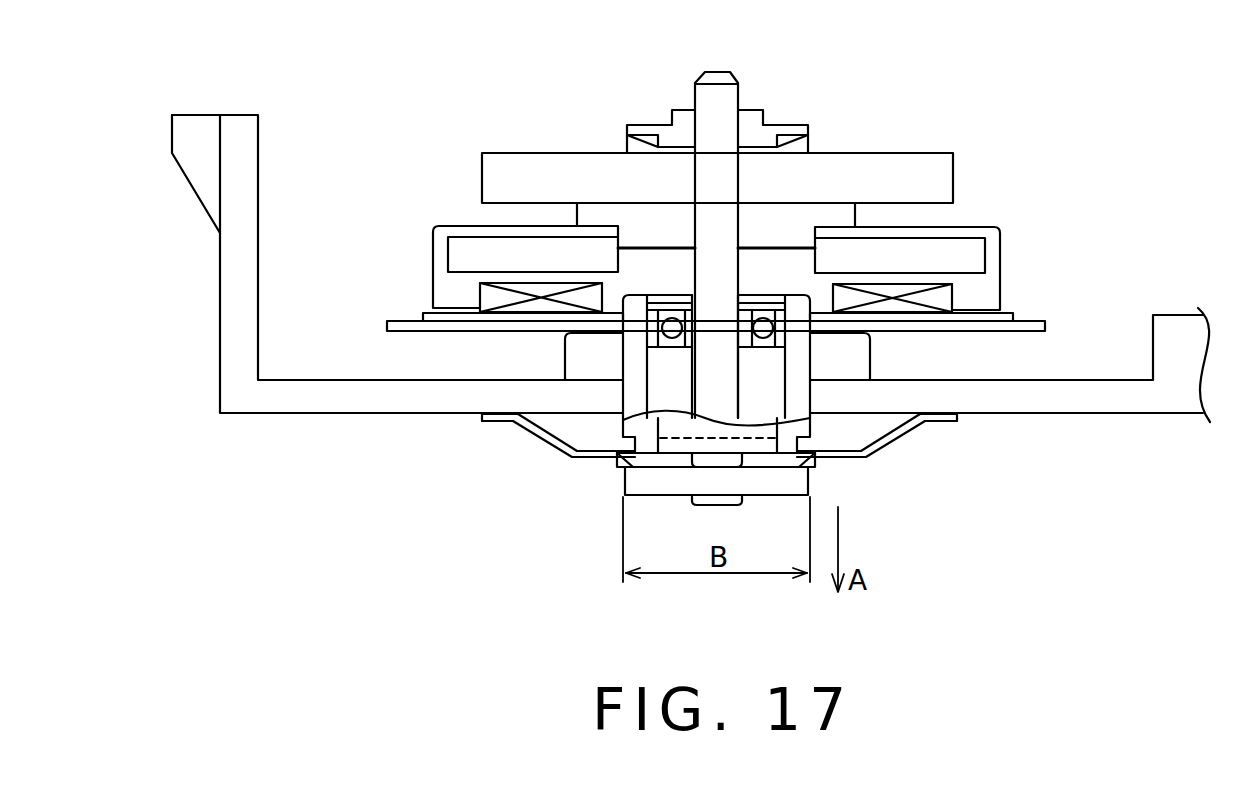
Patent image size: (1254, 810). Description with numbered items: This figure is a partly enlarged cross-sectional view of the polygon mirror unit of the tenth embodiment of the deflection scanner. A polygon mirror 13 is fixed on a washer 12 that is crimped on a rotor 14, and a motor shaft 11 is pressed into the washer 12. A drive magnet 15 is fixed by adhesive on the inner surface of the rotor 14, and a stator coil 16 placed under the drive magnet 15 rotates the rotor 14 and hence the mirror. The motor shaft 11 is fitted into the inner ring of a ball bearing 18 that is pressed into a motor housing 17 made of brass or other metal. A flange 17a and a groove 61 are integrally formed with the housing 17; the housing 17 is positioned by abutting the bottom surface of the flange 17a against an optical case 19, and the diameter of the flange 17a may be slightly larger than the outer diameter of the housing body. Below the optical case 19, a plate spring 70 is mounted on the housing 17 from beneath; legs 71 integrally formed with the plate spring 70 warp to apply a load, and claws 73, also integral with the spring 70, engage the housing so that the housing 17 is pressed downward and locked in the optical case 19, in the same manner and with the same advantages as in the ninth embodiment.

The motor shaft 11 is at (723, 107).
The washer 12 is at (845, 216).
The polygon mirror 13 is at (935, 172).
The rotor 14 is at (990, 252).
The drive magnet 15 is at (455, 250).
The stator coil 16 is at (942, 302).
The motor housing 17 is at (575, 352).
The flange 17a is at (850, 356).
The ball bearing 18 is at (672, 318).
The optical case 19 is at (1145, 402).
The groove 61 is at (803, 447).
The plate spring 70 is at (577, 455).
The legs 71 is at (905, 437).
The claws 73 is at (617, 465).